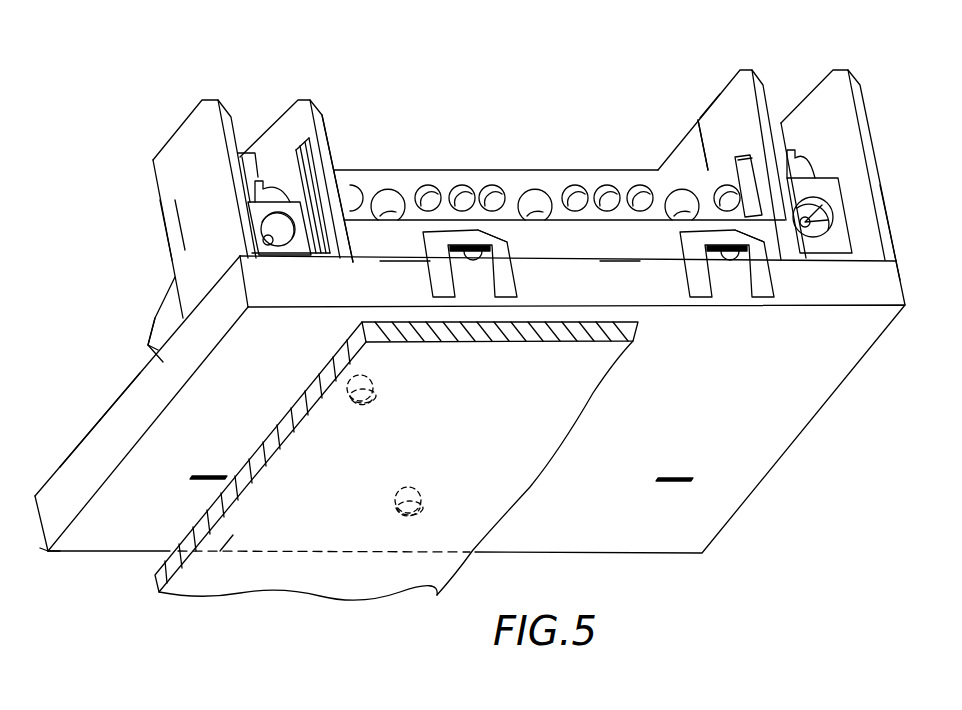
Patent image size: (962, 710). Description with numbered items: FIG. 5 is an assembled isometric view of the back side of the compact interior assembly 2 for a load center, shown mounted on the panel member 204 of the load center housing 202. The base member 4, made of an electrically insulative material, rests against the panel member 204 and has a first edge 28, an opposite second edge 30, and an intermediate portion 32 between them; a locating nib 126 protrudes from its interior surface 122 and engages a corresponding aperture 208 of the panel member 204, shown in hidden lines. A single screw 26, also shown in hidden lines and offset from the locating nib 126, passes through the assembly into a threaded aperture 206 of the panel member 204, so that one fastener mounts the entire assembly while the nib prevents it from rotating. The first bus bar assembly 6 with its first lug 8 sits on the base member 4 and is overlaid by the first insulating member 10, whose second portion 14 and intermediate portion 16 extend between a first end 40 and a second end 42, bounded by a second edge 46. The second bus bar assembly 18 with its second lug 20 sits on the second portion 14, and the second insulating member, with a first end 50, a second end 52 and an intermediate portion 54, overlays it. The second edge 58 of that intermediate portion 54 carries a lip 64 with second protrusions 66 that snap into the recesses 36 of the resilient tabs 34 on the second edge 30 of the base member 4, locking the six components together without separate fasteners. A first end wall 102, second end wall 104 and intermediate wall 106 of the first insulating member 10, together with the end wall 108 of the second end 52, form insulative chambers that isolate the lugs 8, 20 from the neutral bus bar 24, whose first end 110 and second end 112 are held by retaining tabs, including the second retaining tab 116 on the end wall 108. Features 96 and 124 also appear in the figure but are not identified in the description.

The interior assembly 2 is at (764, 507).
The base member 4 is at (84, 428).
The first bus bar assembly 6 is at (250, 150).
The first electrical connector 8 is at (287, 205).
The first insulating member 10 is at (140, 297).
The second portion 14 is at (185, 254).
The intermediate portion 16 is at (145, 336).
The second bus bar assembly 18 is at (788, 121).
The second electrical connector 20 is at (829, 186).
The neutral bus bar 24 is at (527, 181).
The screw 26 is at (421, 510).
The first edge 28 is at (45, 552).
The second edge 30 is at (258, 283).
The intermediate portion 32 is at (124, 414).
The resilient tabs 34 is at (433, 237).
The recesses 36 is at (483, 250).
The first end 40 is at (161, 330).
The second end 42 is at (893, 258).
The second edge 46 is at (334, 257).
The first end 50 is at (362, 206).
The second end 52 is at (701, 116).
The intermediate portion 54 is at (613, 244).
The second edge 58 is at (561, 249).
The lip 64 is at (418, 253).
The second protrusions 66 is at (469, 257).
The block 96 is at (172, 297).
The first end wall 102 is at (182, 138).
The second end wall 104 is at (829, 93).
The intermediate wall 106 is at (294, 112).
The end wall 108 is at (737, 80).
The first end 110 is at (339, 155).
The second end 112 is at (716, 166).
The second retaining tab 116 is at (744, 162).
The interior surface 122 is at (742, 363).
The left wall 124 is at (57, 470).
The locating nib 126 is at (372, 405).
The housing 202 is at (305, 603).
The panel member 204 is at (233, 537).
The aperture 206 is at (396, 510).
The aperture 208 is at (352, 400).